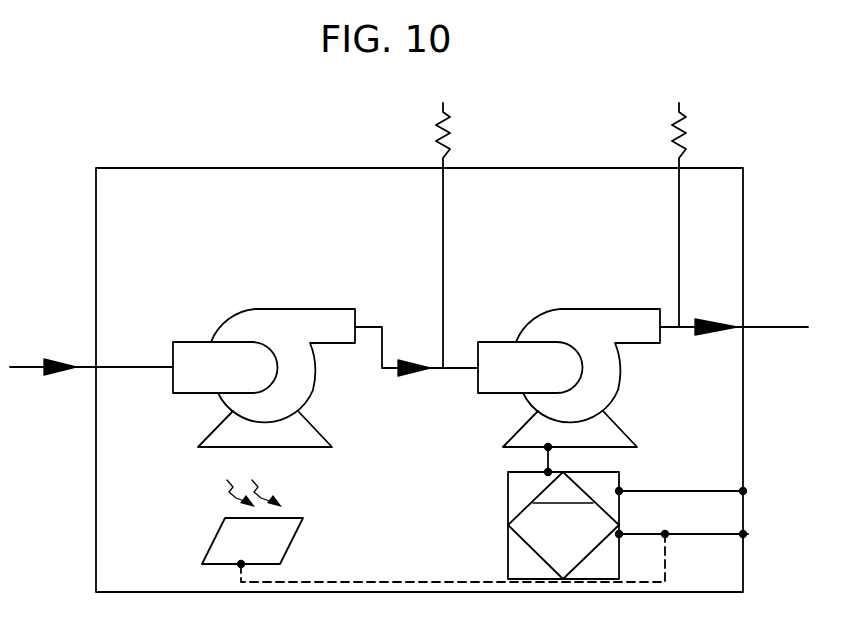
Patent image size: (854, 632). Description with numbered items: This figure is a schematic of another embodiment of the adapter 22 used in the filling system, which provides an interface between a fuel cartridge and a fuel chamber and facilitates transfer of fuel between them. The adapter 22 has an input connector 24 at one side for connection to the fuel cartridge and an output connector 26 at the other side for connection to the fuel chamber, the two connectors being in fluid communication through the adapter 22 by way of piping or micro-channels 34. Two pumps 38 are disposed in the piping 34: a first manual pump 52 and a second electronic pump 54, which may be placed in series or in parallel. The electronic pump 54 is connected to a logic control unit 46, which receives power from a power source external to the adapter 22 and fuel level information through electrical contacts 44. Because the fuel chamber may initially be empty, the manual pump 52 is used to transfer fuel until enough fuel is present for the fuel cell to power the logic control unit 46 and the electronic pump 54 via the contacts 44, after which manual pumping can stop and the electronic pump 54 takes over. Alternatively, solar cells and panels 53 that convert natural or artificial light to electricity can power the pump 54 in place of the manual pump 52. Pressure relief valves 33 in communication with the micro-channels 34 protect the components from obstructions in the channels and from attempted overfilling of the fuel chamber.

The adapter 22 is at (118, 117).
The input connector 24 is at (86, 367).
The output connector 26 is at (745, 327).
The pressure relief valve 33 is at (452, 118).
The piping / micro-channels 34 is at (136, 368).
The pump 38 is at (517, 405).
The electrical contacts 44 is at (743, 491).
The logic control unit 46 is at (508, 537).
The first manual pump 52 is at (243, 310).
The solar cells and panels 53 is at (231, 537).
The second electronic pump 54 is at (562, 310).